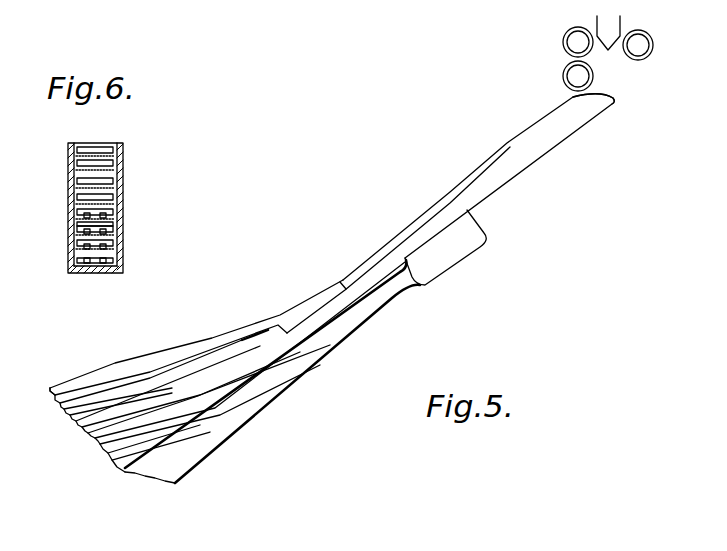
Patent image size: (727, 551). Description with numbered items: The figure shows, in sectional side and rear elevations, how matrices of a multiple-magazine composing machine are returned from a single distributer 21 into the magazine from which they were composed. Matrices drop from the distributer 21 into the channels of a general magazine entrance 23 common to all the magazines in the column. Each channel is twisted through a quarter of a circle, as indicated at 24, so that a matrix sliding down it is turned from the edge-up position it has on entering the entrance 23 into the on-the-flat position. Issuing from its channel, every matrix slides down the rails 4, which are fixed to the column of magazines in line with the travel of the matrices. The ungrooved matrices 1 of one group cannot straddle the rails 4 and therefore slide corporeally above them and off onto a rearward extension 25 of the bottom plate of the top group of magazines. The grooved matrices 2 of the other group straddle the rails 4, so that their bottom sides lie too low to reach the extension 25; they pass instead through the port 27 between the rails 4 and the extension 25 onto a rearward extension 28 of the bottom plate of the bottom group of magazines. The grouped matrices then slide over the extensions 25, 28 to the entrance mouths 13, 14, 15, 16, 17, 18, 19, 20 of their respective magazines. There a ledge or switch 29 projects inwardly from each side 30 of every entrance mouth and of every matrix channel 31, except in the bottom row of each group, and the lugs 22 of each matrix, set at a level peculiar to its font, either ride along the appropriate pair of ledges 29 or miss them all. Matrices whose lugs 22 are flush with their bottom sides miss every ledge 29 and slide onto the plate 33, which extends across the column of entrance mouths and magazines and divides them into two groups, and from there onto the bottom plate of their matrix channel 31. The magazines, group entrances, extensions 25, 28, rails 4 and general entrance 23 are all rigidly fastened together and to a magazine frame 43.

In FIG. 6, the matrices of one group 1 is at (123, 167).
In FIG. 6, the matrices of the other group 2 is at (123, 212).
In FIG. 6, the rails 4 is at (73, 213).
In FIG. 5, the rails 4 is at (309, 305).
In FIG. 5, the entrance mouth 13 is at (105, 378).
In FIG. 5, the entrance mouth 14 is at (123, 376).
In FIG. 5, the entrance mouth 15 is at (142, 375).
In FIG. 5, the entrance mouth 16 is at (160, 372).
In FIG. 5, the entrance mouth 17 is at (79, 420).
In FIG. 5, the entrance mouth 18 is at (92, 426).
In FIG. 5, the entrance mouth 19 is at (95, 446).
In FIG. 5, the entrance mouth 20 is at (105, 426).
In FIG. 5, the distributer 21 is at (598, 53).
In FIG. 6, the lugs 22 is at (77, 148).
In FIG. 5, the general magazine entrance 23 is at (593, 108).
In FIG. 5, the twist of the channel 24 is at (434, 201).
In FIG. 5, the rearward extension of the bottom plate of the top group of magazines 25 is at (243, 388).
In FIG. 5, the port 27 is at (271, 327).
In FIG. 5, the rearward extension of the bottom plate of the bottom group of magazines 28 is at (265, 364).
In FIG. 6, the ledge or switch 29 is at (73, 149).
In FIG. 5, the ledge or switch 29 is at (60, 387).
In FIG. 6, the side of entrance mouth 30 is at (70, 151).
In FIG. 5, the side of entrance mouth 30 is at (212, 340).
In FIG. 6, the matrix channel 31 is at (98, 153).
In FIG. 5, the plate 33 is at (70, 411).
In FIG. 5, the magazine frame 43 is at (157, 468).